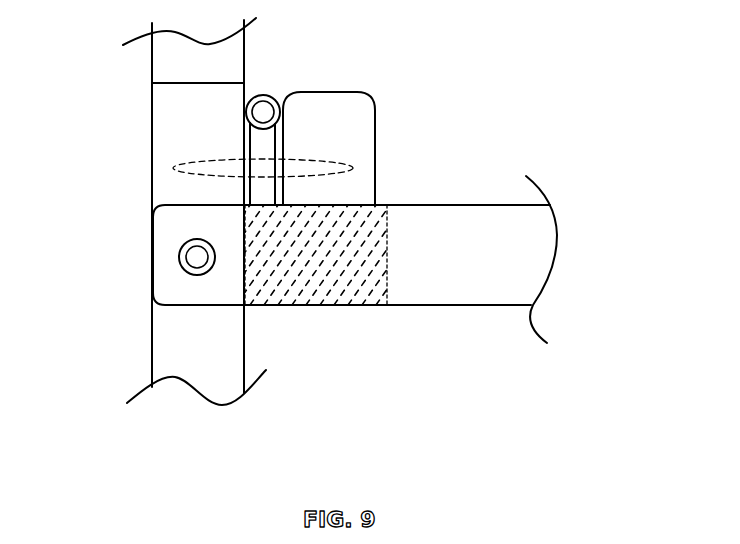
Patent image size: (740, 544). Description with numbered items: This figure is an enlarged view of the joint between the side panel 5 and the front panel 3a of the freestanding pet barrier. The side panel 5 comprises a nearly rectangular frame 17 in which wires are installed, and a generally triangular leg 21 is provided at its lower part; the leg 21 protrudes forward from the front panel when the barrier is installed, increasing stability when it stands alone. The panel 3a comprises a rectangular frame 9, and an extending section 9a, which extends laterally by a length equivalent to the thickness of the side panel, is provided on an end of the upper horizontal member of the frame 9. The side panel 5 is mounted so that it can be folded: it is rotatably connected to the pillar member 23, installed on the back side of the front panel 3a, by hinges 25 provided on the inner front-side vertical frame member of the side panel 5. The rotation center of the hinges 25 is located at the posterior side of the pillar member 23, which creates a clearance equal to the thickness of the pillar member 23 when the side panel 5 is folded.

The panel 3a is at (452, 322).
The side panel 5 is at (140, 146).
The rectangular frame 9 is at (452, 205).
The extending section 9a is at (158, 272).
The nearly rectangular frame 17 is at (152, 63).
The leg 21 is at (150, 355).
The pillar member 23 is at (377, 135).
The hinge 25 is at (265, 95).